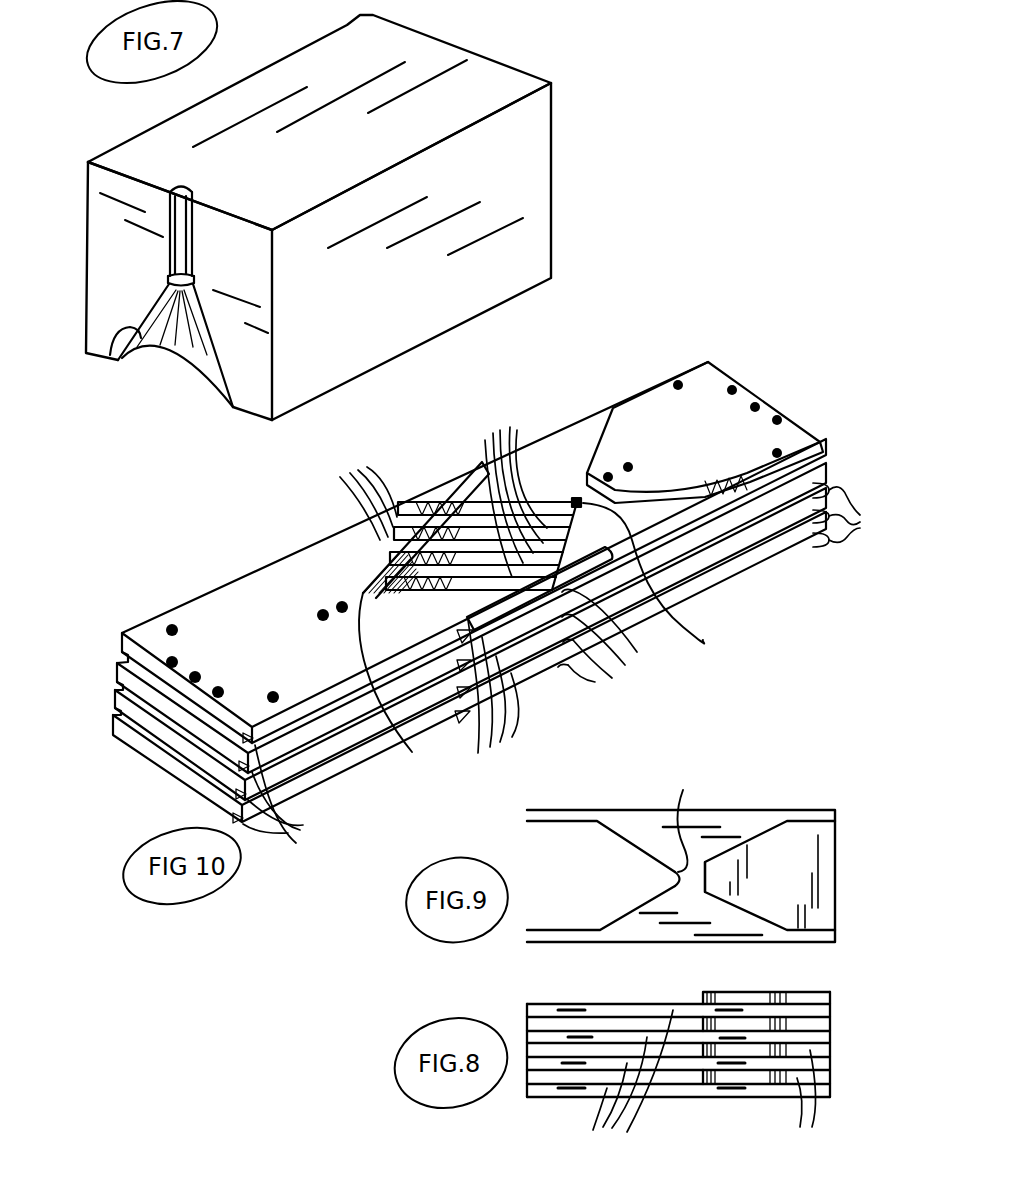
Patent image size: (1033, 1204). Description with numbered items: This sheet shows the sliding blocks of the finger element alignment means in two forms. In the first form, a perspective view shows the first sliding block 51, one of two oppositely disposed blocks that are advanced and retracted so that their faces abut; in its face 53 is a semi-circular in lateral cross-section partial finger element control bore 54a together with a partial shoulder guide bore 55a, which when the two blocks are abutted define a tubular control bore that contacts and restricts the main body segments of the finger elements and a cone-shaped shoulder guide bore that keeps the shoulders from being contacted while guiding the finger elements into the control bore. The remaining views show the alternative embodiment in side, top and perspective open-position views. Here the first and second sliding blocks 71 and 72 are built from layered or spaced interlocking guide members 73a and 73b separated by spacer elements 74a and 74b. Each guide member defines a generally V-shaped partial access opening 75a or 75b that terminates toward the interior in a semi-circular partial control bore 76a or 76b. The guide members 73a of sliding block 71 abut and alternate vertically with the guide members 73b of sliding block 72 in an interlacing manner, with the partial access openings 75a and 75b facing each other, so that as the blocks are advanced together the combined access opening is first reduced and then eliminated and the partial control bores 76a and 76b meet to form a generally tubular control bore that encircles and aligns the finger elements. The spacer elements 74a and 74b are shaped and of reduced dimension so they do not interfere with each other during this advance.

In FIG. 7, the first sliding block 51 is at (548, 160).
In FIG. 7, the face of sliding block 53 is at (110, 255).
In FIG. 7, the partial finger element control bore 54a is at (168, 207).
In FIG. 7, the partial shoulder guide bore 55a is at (110, 355).
In FIG. 10, the first sliding block 71 is at (572, 440).
In FIG. 9, the first sliding block 71 is at (735, 821).
In FIG. 8, the first sliding block 71 is at (815, 1028).
In FIG. 10, the second sliding block 72 is at (280, 580).
In FIG. 10, the guide members 73a is at (524, 572).
In FIG. 9, the guide members 73a is at (563, 810).
In FIG. 8, the guide members 73a is at (633, 1090).
In FIG. 10, the guide members 73b is at (502, 702).
In FIG. 10, the spacer elements 74a is at (757, 430).
In FIG. 9, the spacer elements 74a is at (838, 888).
In FIG. 8, the spacer elements 74a is at (815, 992).
In FIG. 10, the spacer elements 74b is at (298, 795).
In FIG. 10, the partial access opening 75a is at (516, 483).
In FIG. 9, the partial access opening 75a is at (640, 905).
In FIG. 10, the partial access opening 75b is at (362, 493).
In FIG. 10, the partial control bore 76a is at (672, 579).
In FIG. 9, the partial control bore 76a is at (699, 813).
In FIG. 10, the partial control bore 76b is at (400, 694).